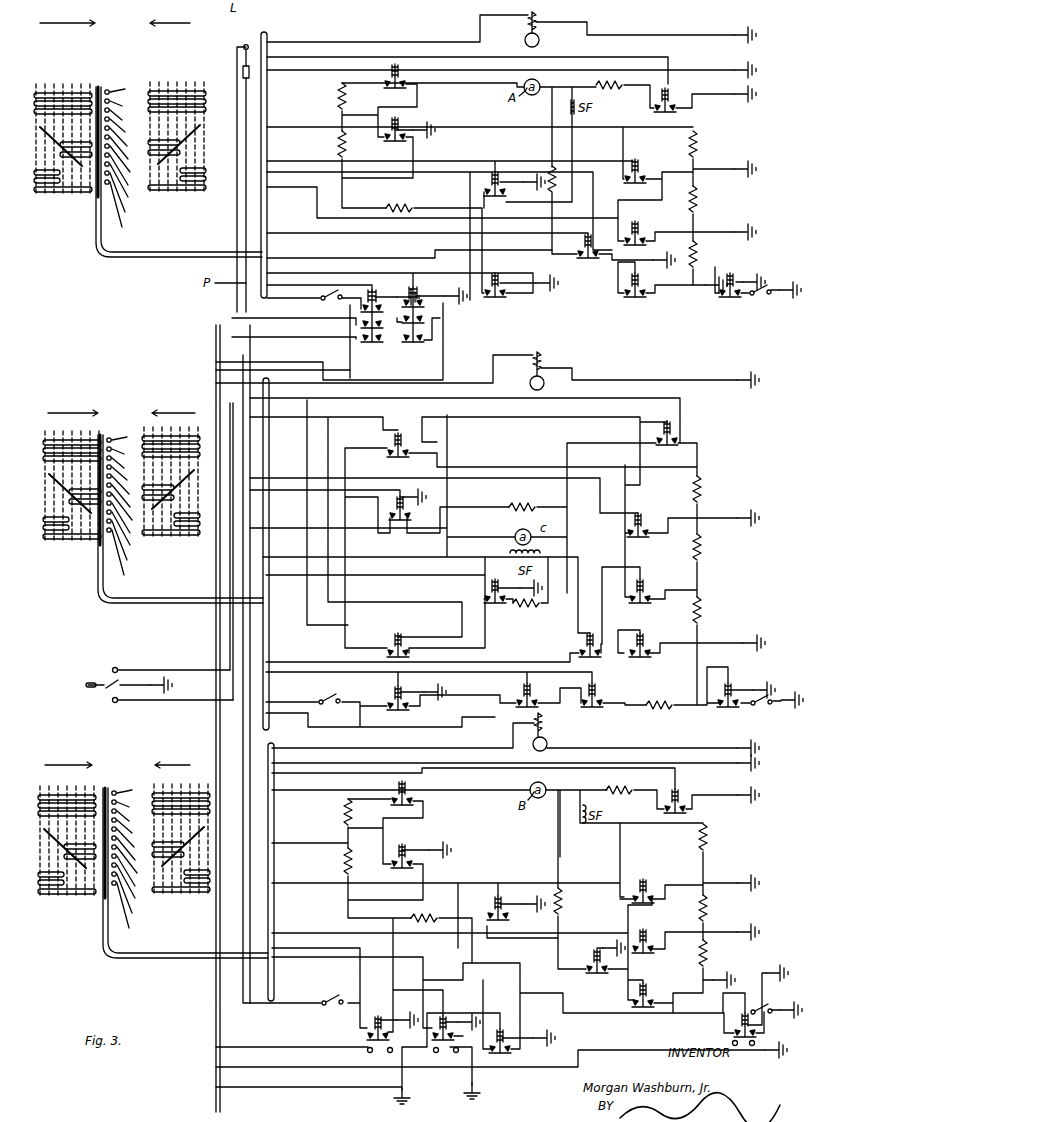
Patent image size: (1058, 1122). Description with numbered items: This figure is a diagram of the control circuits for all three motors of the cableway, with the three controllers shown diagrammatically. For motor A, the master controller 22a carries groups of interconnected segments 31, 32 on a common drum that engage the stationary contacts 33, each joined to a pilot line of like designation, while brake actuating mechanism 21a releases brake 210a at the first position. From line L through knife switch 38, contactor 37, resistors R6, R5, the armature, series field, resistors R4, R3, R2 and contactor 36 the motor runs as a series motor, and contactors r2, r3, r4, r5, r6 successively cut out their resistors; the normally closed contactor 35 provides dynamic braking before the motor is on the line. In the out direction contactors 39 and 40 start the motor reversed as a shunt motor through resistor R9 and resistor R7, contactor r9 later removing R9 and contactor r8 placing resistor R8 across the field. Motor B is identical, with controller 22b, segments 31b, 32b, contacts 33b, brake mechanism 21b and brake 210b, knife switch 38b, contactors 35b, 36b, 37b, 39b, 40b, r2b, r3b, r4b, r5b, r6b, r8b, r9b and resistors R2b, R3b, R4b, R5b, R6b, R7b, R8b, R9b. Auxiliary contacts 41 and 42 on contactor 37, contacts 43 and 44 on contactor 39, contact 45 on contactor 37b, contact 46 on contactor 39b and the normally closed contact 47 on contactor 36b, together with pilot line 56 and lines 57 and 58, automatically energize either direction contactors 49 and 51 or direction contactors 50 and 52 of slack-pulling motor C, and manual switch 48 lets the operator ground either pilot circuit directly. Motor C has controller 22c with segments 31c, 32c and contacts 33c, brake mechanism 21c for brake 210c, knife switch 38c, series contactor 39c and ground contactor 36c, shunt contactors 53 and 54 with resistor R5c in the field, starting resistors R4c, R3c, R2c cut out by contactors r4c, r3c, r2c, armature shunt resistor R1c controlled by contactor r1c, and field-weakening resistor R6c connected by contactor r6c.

The brake actuating mechanism 21a is at (384, 36).
The brake 210a is at (552, 40).
The master controller 22a is at (134, 130).
The group of interconnected segments 31 is at (30, 92).
The group of interconnected segments 32 is at (204, 100).
The stationary contacts 33 is at (114, 148).
The contactor 35 is at (618, 217).
The contactor 36 is at (731, 298).
The contactor 37 is at (334, 311).
The knife switch 38 is at (538, 300).
The contactor 39 is at (430, 306).
The contactor 40 is at (502, 294).
The normally open contact 41 is at (361, 328).
The normally open contact 42 is at (361, 342).
The normally open contact 43 is at (442, 330).
The normally open contact 44 is at (413, 346).
The normally open contact 45 is at (366, 1056).
The normally open contact 46 is at (437, 1087).
The normally closed contact 47 is at (758, 1040).
The manually operated switch 48 is at (104, 678).
The direction contactor 49 is at (318, 636).
The direction contactor 50 is at (581, 647).
The direction contactor 51 is at (638, 439).
The direction contactor 52 is at (388, 454).
The contactor 53 is at (387, 702).
The contactor 54 is at (614, 706).
The pilot line 56 is at (248, 1074).
The line 57 is at (258, 1088).
The line 58 is at (246, 1051).
The brake actuating mechanism 21c is at (487, 371).
The brake 210c is at (521, 379).
The operating controller 22c is at (153, 495).
The contact segment 31c is at (72, 491).
The contact segment 32c is at (171, 489).
The stationary contacts 33c is at (116, 497).
The contactor 36c is at (530, 706).
The knife switch 38c is at (542, 706).
The contactor 39c is at (530, 708).
The brake actuating mechanism 21b is at (515, 734).
The brake 210b is at (556, 748).
The master controller 22b is at (141, 857).
The group of interconnected segments 31b is at (67, 860).
The group of interconnected segments 32b is at (181, 857).
The stationary contacts 33b is at (121, 854).
The contactor 35b is at (411, 908).
The contactor 36b is at (728, 1029).
The contactor 37b is at (366, 1036).
The knife switch 38b is at (538, 1004).
The contactor 39b is at (458, 1028).
The contactor 40b is at (517, 1045).
The resistor R5 is at (331, 96).
The resistor R6 is at (331, 144).
The resistor R7 is at (399, 200).
The resistor R8 is at (609, 93).
The resistor R9 is at (552, 167).
The resistor R4 is at (705, 144).
The resistor R3 is at (705, 199).
The resistor R2 is at (705, 254).
The contactor r5 is at (350, 83).
The contactor r6 is at (348, 134).
The contactor r8 is at (486, 87).
The contactor r4 is at (467, 170).
The contactor r3 is at (481, 218).
The contactor r9 is at (450, 249).
The contactor r2 is at (468, 275).
The armature shunt resistor R1c is at (521, 498).
The resistor R6c is at (529, 613).
The starting resistor R4c is at (713, 489).
The starting resistor R3c is at (713, 547).
The starting resistor R2c is at (713, 610).
The resistor R5c is at (659, 715).
The contactor r1c is at (355, 505).
The contactor r6c is at (440, 597).
The contactor r4c is at (463, 506).
The contactor r3c is at (464, 566).
The contactor r2c is at (465, 656).
The resistor R5b is at (334, 812).
The resistor R6b is at (334, 861).
The resistor R7b is at (431, 910).
The resistor R8b is at (619, 799).
The resistor R9b is at (572, 901).
The resistor R4b is at (719, 837).
The resistor R3b is at (719, 908).
The resistor R2b is at (719, 953).
The contactor r5b is at (347, 795).
The contactor r6b is at (347, 854).
The contactor r8b is at (673, 787).
The contactor r4b is at (467, 889).
The contactor r3b is at (486, 939).
The contactor r9b is at (445, 972).
The contactor r2b is at (489, 975).